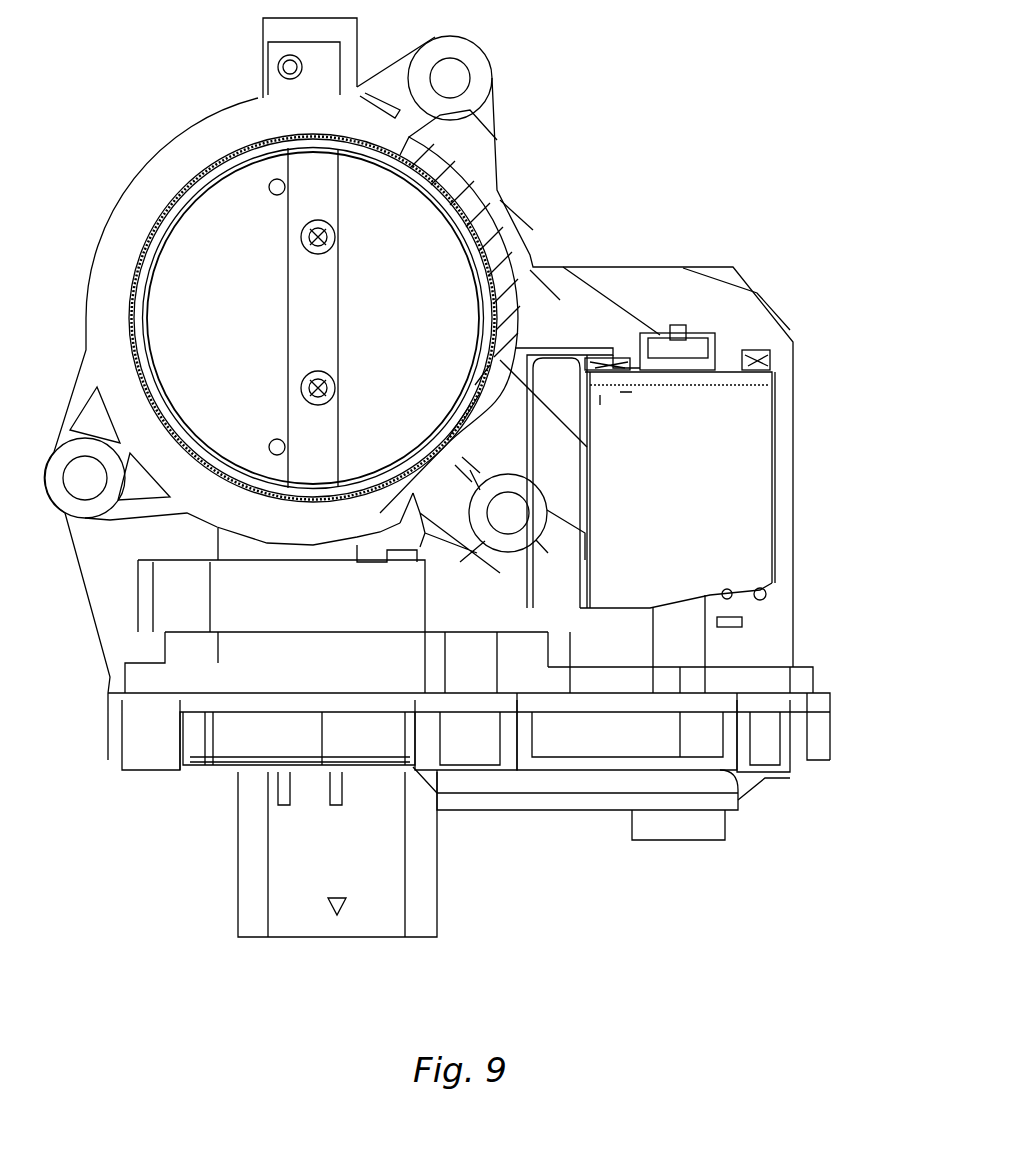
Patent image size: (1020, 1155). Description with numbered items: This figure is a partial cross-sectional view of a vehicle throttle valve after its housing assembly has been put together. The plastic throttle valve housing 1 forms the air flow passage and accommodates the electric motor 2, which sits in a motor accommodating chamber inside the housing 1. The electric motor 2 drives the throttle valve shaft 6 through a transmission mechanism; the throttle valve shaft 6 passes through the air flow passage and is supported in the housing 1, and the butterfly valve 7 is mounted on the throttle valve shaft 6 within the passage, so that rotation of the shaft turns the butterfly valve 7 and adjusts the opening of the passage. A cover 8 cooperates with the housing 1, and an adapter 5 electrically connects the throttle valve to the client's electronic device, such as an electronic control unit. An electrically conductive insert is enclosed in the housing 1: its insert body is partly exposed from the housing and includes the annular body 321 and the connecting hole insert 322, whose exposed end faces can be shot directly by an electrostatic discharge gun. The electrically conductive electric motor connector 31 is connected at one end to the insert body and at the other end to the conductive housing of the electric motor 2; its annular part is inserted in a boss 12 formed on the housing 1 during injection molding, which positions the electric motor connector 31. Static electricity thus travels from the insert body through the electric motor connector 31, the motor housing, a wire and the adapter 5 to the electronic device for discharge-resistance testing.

The throttle valve housing 1 is at (697, 305).
The electric motor 2 is at (725, 490).
The adapter 5 is at (345, 845).
The throttle valve shaft 6 is at (318, 178).
The butterfly valve 7 is at (215, 268).
The cover 8 is at (640, 777).
The boss 12 is at (727, 350).
The electric motor connector 31 is at (583, 350).
The annular body 321 is at (480, 235).
The connecting hole insert 322 is at (540, 535).